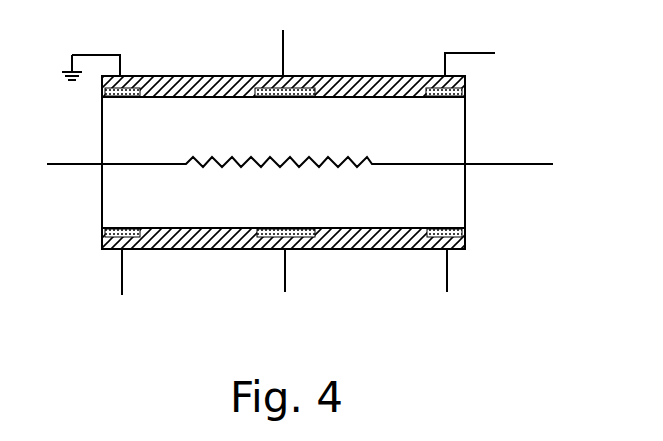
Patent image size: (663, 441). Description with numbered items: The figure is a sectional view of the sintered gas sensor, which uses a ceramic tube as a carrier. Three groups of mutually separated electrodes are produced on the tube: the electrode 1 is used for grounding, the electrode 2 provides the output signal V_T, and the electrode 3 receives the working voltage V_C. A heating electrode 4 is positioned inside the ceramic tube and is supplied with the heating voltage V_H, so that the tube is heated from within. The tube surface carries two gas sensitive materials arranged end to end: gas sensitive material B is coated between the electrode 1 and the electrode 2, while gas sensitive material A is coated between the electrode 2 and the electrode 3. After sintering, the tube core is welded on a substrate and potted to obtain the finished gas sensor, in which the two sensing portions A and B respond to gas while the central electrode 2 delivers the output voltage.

The electrode 1 is at (101, 181).
The electrode 2 is at (285, 164).
The electrode 3 is at (482, 175).
The heating electrode 4 is at (295, 181).
The gas sensitive material A is at (368, 76).
The gas sensitive material B is at (205, 76).